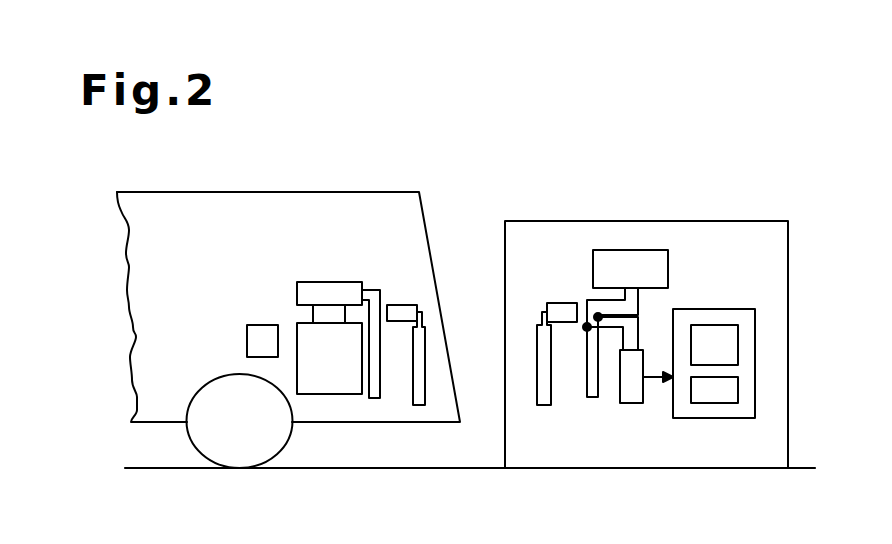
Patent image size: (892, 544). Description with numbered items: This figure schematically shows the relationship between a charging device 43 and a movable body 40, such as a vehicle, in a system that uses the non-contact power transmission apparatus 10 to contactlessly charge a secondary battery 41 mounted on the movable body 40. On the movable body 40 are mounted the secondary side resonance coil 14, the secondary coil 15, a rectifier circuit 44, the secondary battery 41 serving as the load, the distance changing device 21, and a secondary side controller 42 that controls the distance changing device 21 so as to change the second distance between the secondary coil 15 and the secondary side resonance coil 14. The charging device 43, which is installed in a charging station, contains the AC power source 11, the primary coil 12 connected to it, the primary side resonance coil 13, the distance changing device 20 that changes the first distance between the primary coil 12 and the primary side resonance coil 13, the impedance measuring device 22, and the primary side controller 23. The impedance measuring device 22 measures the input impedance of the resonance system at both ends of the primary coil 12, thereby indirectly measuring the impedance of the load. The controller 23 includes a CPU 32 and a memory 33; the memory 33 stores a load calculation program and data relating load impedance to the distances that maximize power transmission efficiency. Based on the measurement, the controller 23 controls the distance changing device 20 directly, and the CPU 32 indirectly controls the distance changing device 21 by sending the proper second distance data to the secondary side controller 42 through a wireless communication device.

The non-contact power transmission apparatus 10 is at (655, 159).
The AC power source 11 is at (593, 268).
The primary coil 12 is at (588, 398).
The primary side resonance coil 13 is at (550, 398).
The secondary side resonance coil 14 is at (412, 398).
The secondary coil 15 is at (381, 390).
The distance changing device 20 is at (558, 304).
The distance changing device 21 is at (398, 305).
The impedance measuring device 22 is at (643, 390).
The controller 23 is at (737, 418).
The CPU 32 is at (727, 332).
The memory 33 is at (705, 395).
The movable body 40 is at (315, 191).
The secondary battery 41 is at (297, 330).
The controller 42 is at (247, 335).
The charging device 43 is at (733, 221).
The rectifier circuit 44 is at (310, 282).